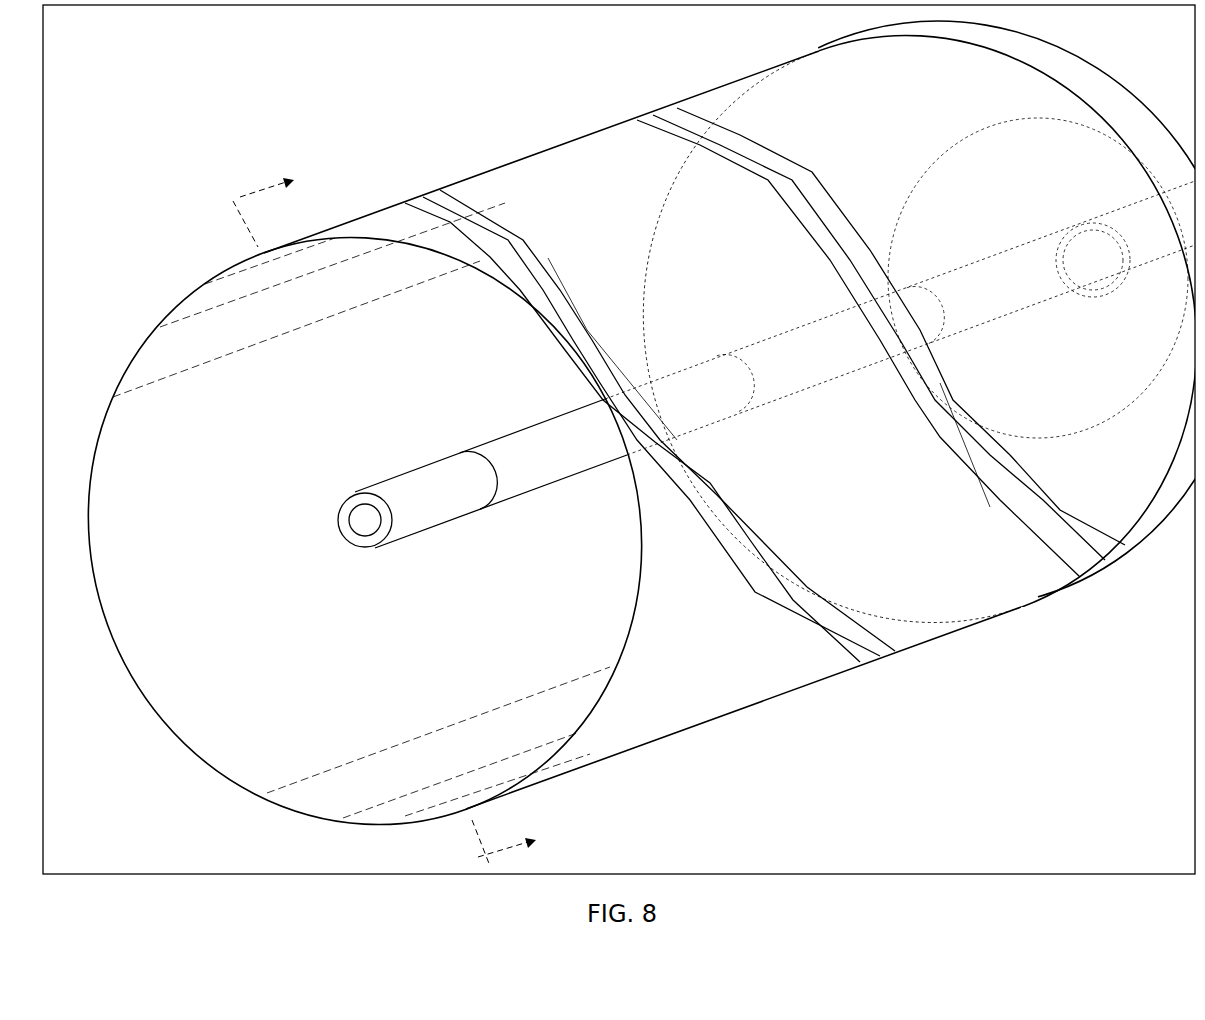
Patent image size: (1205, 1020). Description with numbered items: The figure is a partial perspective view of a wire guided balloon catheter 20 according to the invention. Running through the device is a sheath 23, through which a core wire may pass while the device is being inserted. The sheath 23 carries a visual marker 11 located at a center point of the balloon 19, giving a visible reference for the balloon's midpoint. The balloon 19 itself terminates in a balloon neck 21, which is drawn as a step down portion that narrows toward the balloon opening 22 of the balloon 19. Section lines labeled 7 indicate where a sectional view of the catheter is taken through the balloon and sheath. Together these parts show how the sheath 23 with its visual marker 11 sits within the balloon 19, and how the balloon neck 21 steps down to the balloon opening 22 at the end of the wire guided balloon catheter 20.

The section line 7- 7 is at (394, 517).
The visual marker 11 is at (416, 504).
The balloon 19 is at (430, 192).
The wire guided balloon catheter 20 is at (247, 100).
The balloon neck 21 is at (940, 156).
The balloon opening 22 is at (1060, 224).
The sheath 23 is at (501, 469).